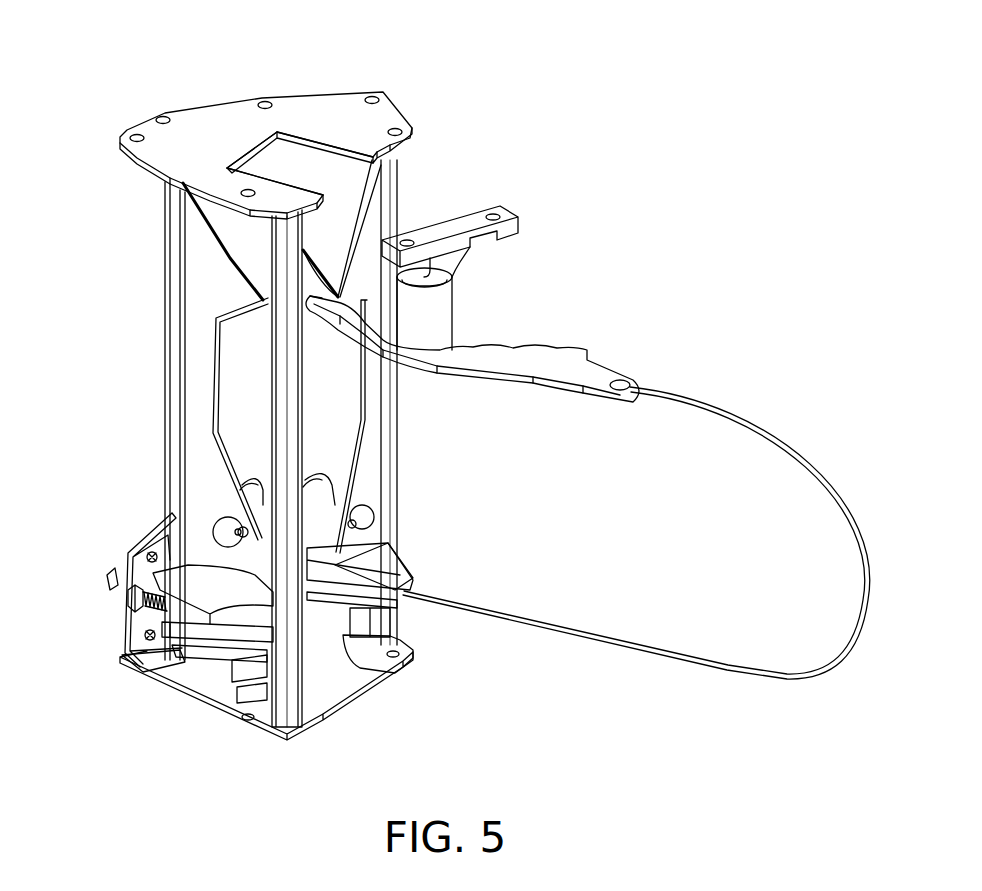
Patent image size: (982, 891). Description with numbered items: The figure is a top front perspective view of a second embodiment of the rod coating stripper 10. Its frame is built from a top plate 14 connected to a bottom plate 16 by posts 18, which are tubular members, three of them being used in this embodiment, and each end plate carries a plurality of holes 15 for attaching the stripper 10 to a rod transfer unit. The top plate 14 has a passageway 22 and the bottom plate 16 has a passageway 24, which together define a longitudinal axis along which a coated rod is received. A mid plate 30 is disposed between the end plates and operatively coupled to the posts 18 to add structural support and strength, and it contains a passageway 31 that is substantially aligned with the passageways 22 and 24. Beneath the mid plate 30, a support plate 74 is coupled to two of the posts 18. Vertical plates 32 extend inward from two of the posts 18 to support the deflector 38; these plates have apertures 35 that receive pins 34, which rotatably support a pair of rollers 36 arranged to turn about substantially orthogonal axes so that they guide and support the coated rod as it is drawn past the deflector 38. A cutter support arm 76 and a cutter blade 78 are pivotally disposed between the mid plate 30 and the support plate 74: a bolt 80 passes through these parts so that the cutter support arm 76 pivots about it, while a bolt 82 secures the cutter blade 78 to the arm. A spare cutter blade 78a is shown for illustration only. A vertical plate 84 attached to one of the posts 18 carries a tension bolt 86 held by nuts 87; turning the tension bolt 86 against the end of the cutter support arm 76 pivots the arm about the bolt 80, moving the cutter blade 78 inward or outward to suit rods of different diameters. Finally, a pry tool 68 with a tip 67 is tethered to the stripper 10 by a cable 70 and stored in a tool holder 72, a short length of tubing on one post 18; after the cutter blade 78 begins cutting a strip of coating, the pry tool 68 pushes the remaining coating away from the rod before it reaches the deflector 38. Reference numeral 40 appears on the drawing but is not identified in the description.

The rod coating stripper 10 is at (368, 23).
The top plate 14 is at (328, 113).
The holes 15 is at (137, 134).
The bottom plate 16 is at (197, 692).
The posts 18 is at (171, 277).
The passageway 22 is at (387, 127).
The passageway 24 is at (335, 687).
The mid plate 30 is at (400, 572).
The passageway 31 is at (390, 565).
The vertical plates 32 is at (200, 467).
The pins 34 is at (220, 535).
The apertures 35 is at (233, 507).
The rollers 36 is at (257, 483).
The deflector 38 is at (355, 190).
The brace rod 40 is at (352, 252).
The tip 67 is at (322, 305).
The pry tool 68 is at (577, 355).
The cable 70 is at (740, 415).
The tool holder 72 is at (454, 300).
The support plate 74 is at (205, 665).
The cutter support arm 76 is at (125, 667).
The cutter blade 78 is at (376, 620).
The spare cutter blade 78a is at (520, 230).
The bolt 80 is at (160, 575).
The bolt 82 is at (407, 670).
The vertical plate 84 is at (138, 630).
The tension bolt 86 is at (145, 612).
The nuts 87 is at (127, 592).